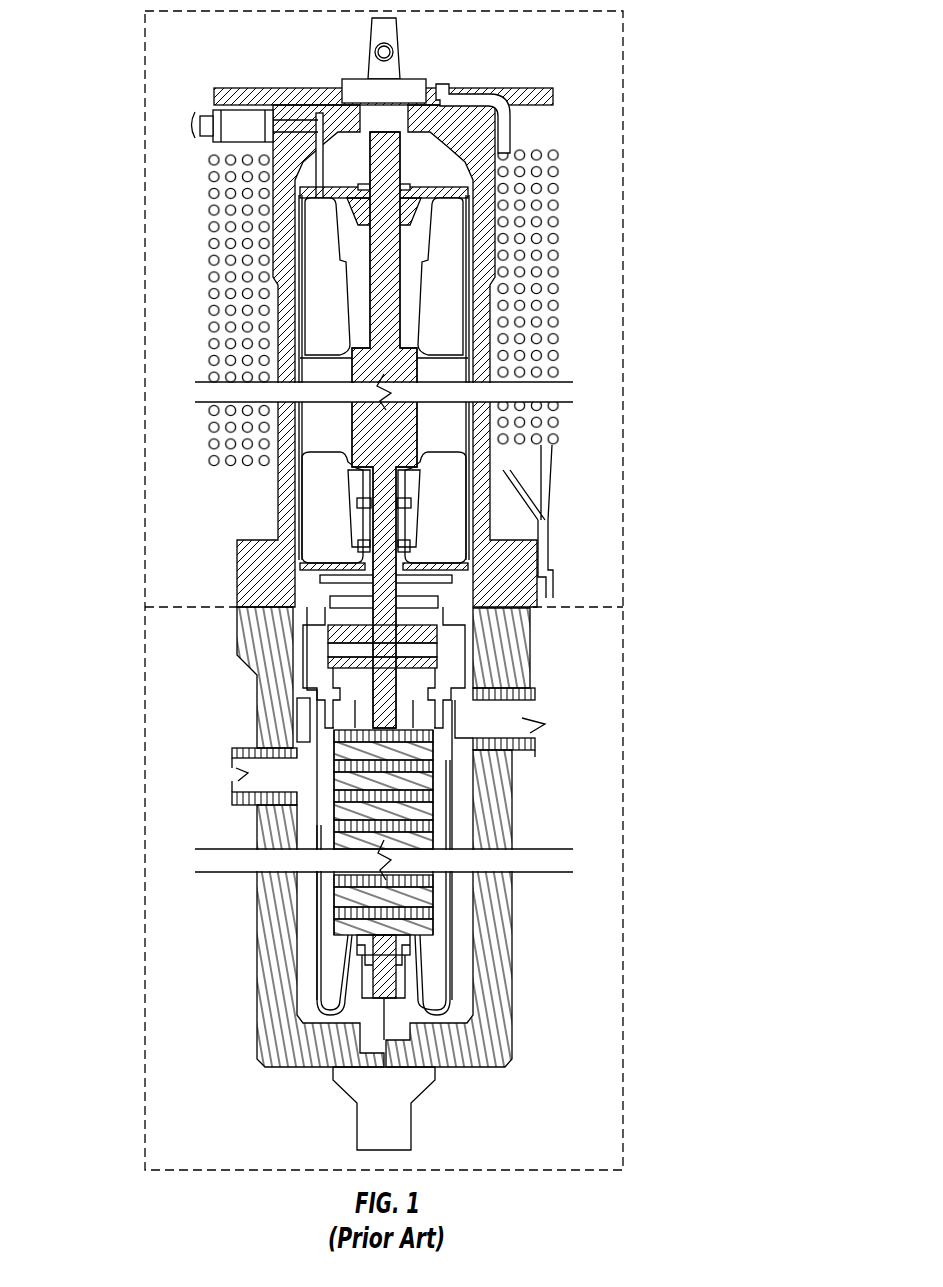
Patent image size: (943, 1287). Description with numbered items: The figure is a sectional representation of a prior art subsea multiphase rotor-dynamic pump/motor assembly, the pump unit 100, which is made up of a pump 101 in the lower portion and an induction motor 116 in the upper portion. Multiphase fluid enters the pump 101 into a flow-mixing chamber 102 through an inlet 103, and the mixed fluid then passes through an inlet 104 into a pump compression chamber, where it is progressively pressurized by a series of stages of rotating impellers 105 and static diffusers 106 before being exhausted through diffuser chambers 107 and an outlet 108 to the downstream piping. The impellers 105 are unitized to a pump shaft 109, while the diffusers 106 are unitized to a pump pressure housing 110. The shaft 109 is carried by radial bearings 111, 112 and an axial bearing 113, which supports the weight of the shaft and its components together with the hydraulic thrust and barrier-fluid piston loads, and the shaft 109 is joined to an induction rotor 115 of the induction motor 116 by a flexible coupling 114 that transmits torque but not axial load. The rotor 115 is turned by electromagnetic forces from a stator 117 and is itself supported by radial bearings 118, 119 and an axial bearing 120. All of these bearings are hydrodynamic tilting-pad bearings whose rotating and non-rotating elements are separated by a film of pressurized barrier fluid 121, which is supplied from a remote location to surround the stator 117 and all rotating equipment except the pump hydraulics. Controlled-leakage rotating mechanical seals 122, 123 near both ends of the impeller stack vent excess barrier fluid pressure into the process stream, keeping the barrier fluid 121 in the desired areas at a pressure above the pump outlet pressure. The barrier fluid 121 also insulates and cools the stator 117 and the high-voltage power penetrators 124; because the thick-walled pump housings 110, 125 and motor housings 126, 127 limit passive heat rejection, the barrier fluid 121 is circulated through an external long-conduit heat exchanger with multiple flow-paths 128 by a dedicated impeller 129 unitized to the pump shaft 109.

The pump unit 100 is at (114, 58).
The pump 101 is at (145, 647).
The flow-mixing chamber 102 is at (287, 755).
The inlet 103 is at (245, 773).
The inlet 104 is at (423, 978).
The rotating impellers 105 is at (334, 883).
The static diffusers 106 is at (334, 897).
The diffuser chambers 107 is at (410, 703).
The outlet 108 is at (537, 728).
The pump shaft 109 is at (357, 960).
The pump pressure housing 110 is at (323, 778).
The radial bearing 111 is at (407, 973).
The radial bearing 112 is at (440, 637).
The axial bearing 113 is at (410, 604).
The flexible coupling 114 is at (410, 505).
The induction rotor 115 is at (405, 355).
The induction motor 116 is at (145, 581).
The stator 117 is at (453, 440).
The radial bearing 118 is at (503, 470).
The radial bearing 119 is at (430, 216).
The axial bearing 120 is at (368, 212).
The barrier fluid 121 is at (402, 176).
The rotating mechanical seal 122 is at (417, 947).
The rotating mechanical seal 123 is at (403, 687).
The high-voltage power penetrator 124 is at (230, 145).
The pump housing 125 is at (268, 698).
The motor housing 126 is at (470, 250).
The motor housing 127 is at (486, 285).
The flow-paths 128 is at (543, 547).
The dedicated impeller 129 is at (402, 547).